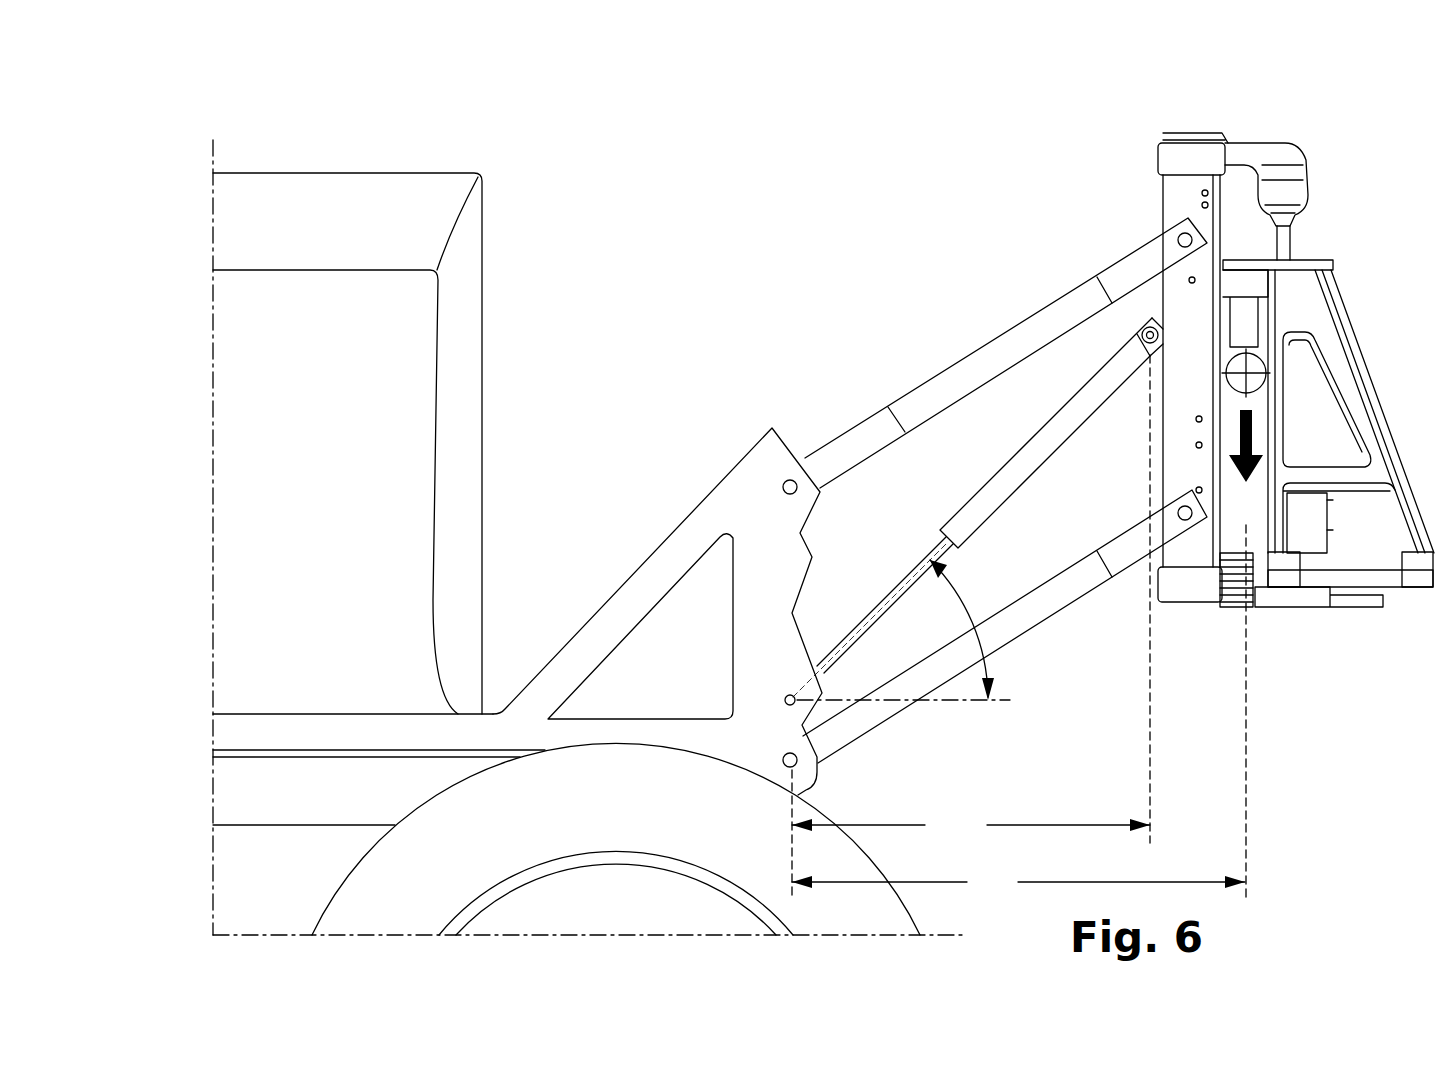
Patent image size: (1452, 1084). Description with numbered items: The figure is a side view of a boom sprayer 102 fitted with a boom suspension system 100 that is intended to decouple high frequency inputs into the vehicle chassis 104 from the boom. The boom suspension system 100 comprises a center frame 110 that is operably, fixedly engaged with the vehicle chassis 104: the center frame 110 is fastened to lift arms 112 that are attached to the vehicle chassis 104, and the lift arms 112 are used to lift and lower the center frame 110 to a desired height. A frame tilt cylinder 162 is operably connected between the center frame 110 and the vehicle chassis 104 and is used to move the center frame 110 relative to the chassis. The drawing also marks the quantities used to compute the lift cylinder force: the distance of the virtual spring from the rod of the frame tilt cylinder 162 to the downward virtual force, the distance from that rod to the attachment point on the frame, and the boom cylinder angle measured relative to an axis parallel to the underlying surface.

The boom suspension system 100 is at (995, 123).
The boom sprayer 102 is at (212, 430).
The vehicle chassis 104 is at (277, 828).
The center frame 110 is at (1250, 132).
The lift arms 112 is at (933, 390).
The frame tilt cylinder 162 is at (1035, 453).